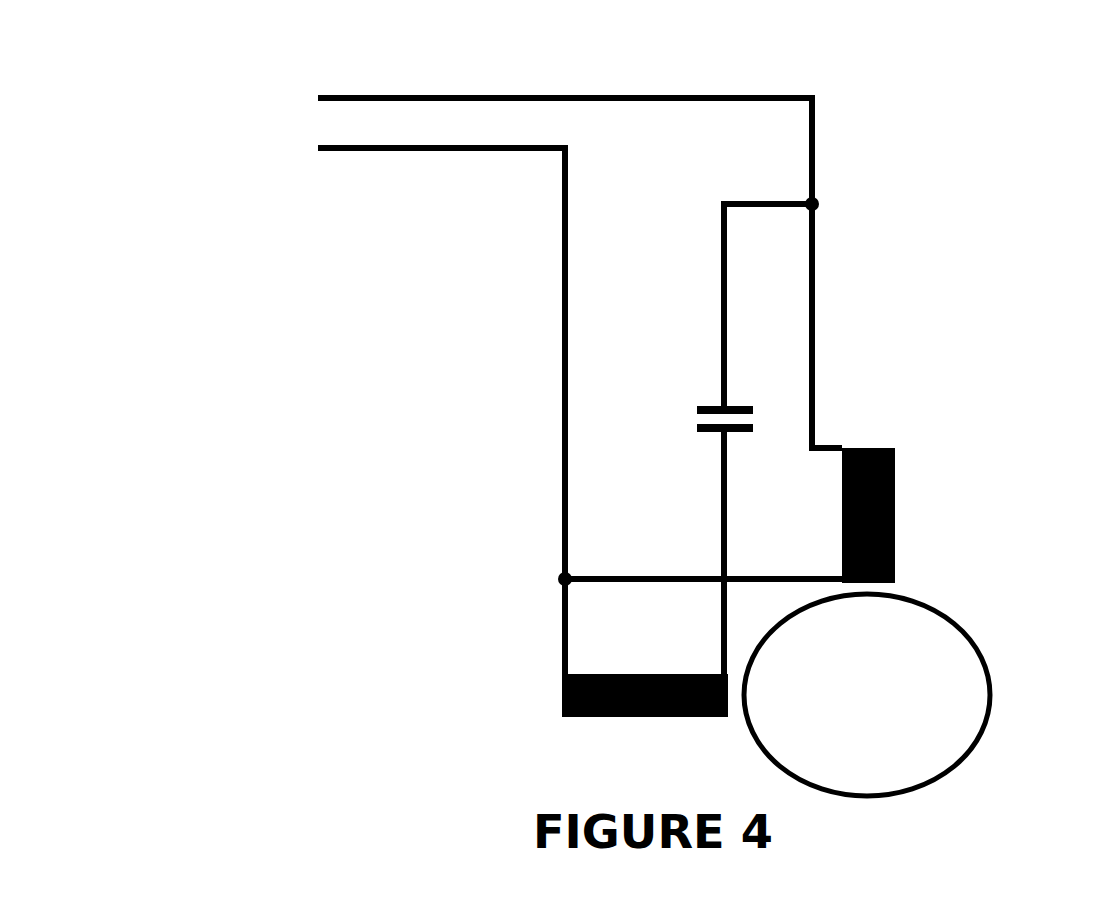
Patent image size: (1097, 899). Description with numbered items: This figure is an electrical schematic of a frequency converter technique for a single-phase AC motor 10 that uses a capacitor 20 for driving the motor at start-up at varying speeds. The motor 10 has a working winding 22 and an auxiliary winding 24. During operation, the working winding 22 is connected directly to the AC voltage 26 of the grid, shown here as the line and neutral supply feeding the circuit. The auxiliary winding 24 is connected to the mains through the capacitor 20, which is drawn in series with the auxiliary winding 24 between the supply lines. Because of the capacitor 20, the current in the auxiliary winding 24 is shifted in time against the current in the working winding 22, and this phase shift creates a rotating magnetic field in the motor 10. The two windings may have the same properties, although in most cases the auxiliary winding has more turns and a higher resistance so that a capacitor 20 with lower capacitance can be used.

The single-phase AC motor 10 is at (917, 680).
The capacitor 20 is at (757, 376).
The working winding 22 is at (914, 493).
The auxiliary winding 24 is at (516, 679).
The AC voltage 26 is at (371, 192).